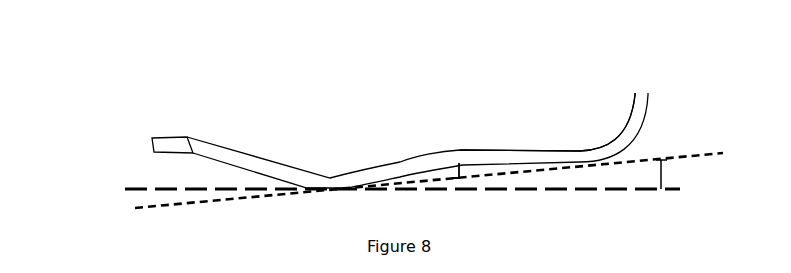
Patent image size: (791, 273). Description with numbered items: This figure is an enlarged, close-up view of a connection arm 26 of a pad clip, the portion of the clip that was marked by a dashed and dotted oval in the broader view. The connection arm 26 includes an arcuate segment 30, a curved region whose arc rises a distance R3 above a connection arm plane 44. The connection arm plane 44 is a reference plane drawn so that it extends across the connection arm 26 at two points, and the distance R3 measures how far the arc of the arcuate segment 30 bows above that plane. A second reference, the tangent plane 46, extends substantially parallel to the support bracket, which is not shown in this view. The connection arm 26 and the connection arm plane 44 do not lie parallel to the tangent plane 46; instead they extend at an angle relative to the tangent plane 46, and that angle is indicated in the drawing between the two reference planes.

The connection arm 26 is at (100, 140).
The arcuate segment 30 is at (492, 148).
The connection arm plane 44 is at (693, 155).
The tangent plane 46 is at (625, 190).
The distance of arc above connection arm plane R3 is at (452, 178).